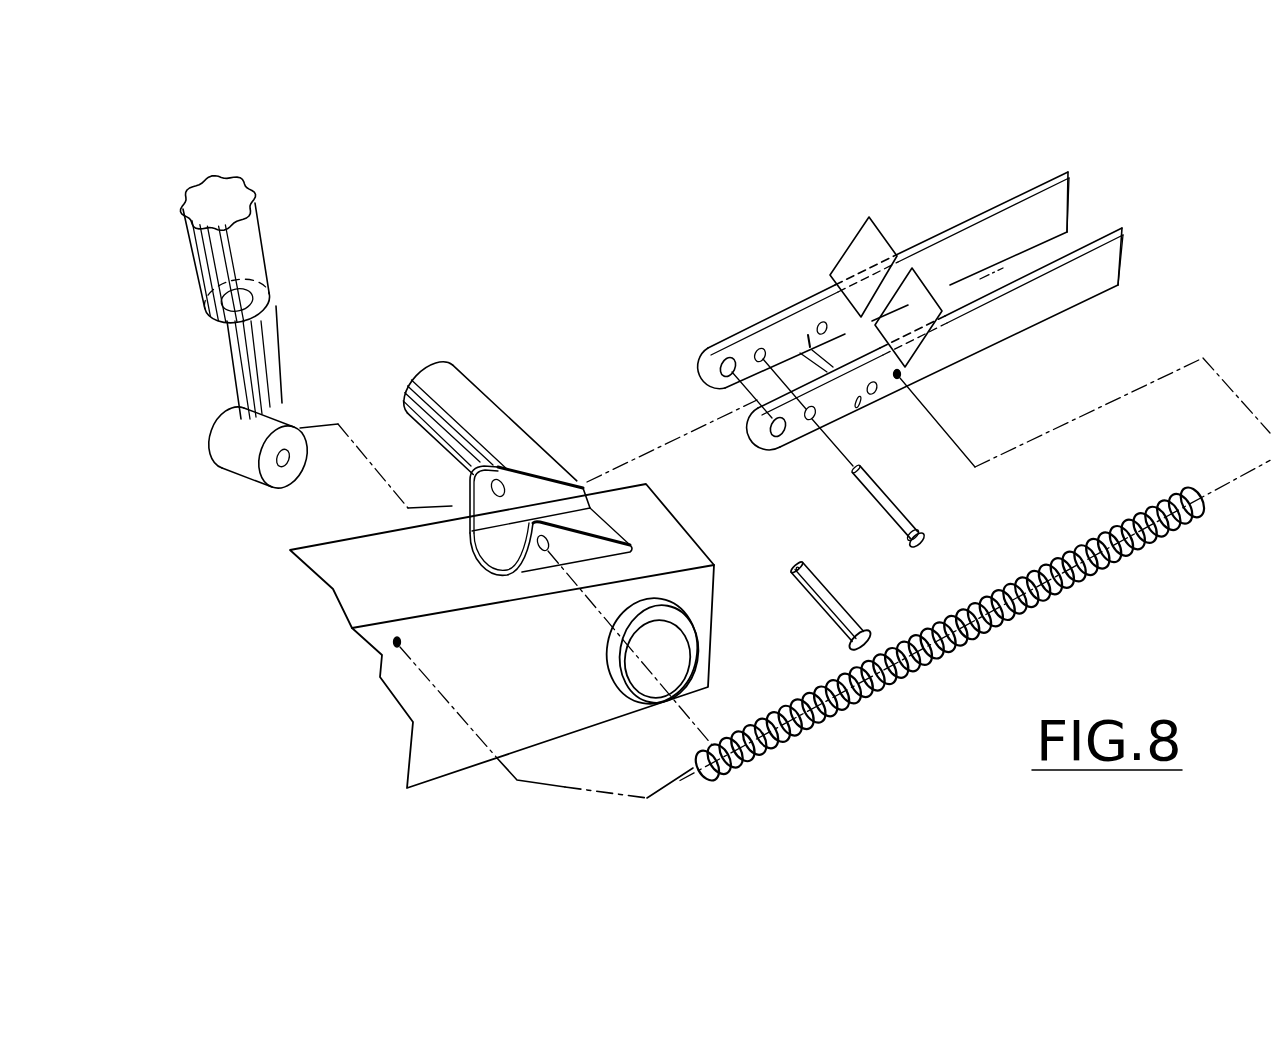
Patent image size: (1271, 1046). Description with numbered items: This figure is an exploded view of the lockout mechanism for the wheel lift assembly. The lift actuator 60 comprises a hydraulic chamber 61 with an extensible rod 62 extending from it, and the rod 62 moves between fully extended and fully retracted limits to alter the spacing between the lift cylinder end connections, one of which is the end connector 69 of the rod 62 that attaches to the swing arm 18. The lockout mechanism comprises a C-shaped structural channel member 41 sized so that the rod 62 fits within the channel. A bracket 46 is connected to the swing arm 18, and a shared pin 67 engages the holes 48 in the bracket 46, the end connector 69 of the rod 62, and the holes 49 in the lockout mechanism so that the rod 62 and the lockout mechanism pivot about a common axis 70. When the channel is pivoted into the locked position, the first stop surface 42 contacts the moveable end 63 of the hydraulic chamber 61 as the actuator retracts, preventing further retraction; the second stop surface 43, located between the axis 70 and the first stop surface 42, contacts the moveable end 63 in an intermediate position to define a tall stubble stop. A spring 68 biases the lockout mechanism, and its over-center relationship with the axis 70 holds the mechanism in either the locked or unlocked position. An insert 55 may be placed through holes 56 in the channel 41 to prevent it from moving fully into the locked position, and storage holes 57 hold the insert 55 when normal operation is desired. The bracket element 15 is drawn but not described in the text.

The cylindrical spring retainer 15 is at (477, 397).
The swing arm 18 is at (358, 608).
The C-shaped structural channel member 41 is at (775, 325).
The first stop surface 42 is at (1097, 184).
The second stop surface 43 is at (884, 230).
The bracket 46 is at (534, 565).
The holes 48 is at (496, 494).
The holes 49 is at (734, 359).
The insert 55 is at (888, 524).
The holes 56 is at (807, 419).
The storage holes 57 is at (876, 394).
The lift actuator 60 is at (284, 193).
The hydraulic chamber 61 is at (256, 245).
The extensible rod 62 is at (259, 357).
The moveable end 63 is at (225, 319).
The shared pin 67 is at (822, 623).
The spring 68 is at (1043, 600).
The end connector 69 is at (241, 487).
The common axis 70 is at (678, 712).